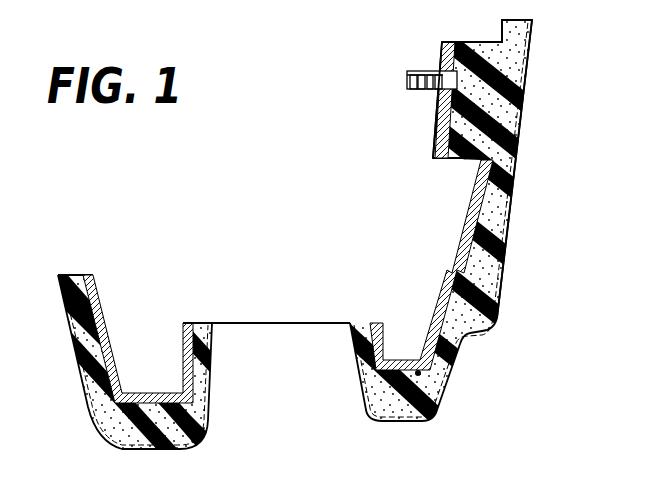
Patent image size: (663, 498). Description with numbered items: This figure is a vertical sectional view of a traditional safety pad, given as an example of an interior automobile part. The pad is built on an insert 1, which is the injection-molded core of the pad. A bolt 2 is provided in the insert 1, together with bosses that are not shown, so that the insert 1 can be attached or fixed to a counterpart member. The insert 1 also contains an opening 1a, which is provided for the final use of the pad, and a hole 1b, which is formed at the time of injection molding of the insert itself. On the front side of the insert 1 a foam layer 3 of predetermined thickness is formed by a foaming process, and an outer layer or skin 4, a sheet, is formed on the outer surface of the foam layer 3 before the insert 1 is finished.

The insert 1 is at (422, 147).
The opening 1a is at (277, 323).
The hole 1b is at (458, 162).
The bolt 2 is at (407, 81).
The foam layer 3 is at (507, 128).
The outer layer or skin 4 is at (510, 219).